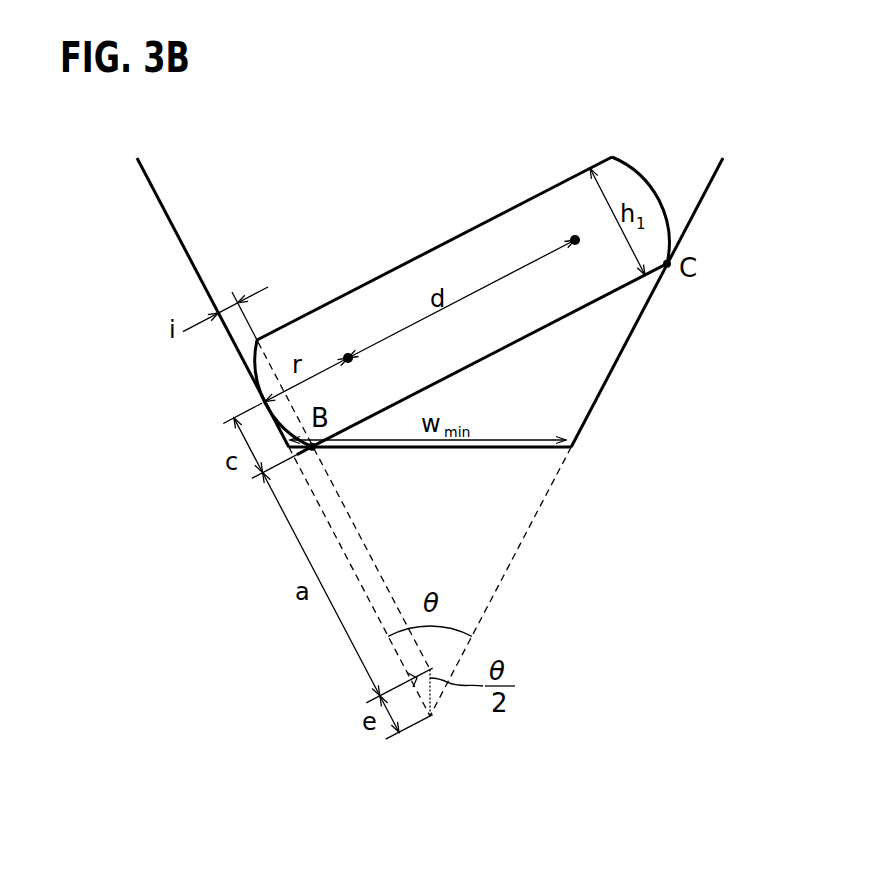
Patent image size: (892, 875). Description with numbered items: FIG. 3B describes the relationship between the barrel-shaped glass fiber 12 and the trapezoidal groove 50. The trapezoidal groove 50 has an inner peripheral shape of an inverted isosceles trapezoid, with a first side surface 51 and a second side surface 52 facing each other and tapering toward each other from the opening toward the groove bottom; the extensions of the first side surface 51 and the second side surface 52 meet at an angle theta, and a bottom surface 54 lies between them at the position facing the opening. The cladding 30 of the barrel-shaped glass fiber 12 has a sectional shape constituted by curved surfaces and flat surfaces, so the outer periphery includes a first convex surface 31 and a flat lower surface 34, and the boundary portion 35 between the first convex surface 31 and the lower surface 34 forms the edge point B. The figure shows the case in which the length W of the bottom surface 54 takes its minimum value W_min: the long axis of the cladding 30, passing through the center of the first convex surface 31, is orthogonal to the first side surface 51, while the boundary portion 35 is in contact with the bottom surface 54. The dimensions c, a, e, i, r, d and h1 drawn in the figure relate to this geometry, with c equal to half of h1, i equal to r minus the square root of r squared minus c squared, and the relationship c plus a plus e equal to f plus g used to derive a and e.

The barrel-shaped glass fiber 12 is at (429, 321).
The cladding 30 is at (429, 317).
The first convex surface 31 is at (255, 362).
The lower surface 34 is at (580, 311).
The boundary portion 35 is at (318, 450).
The trapezoidal groove 50 is at (430, 418).
The first side surface 51 is at (166, 207).
The second side surface 52 is at (695, 207).
The bottom surface 54 is at (608, 418).